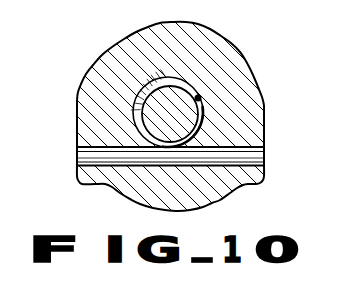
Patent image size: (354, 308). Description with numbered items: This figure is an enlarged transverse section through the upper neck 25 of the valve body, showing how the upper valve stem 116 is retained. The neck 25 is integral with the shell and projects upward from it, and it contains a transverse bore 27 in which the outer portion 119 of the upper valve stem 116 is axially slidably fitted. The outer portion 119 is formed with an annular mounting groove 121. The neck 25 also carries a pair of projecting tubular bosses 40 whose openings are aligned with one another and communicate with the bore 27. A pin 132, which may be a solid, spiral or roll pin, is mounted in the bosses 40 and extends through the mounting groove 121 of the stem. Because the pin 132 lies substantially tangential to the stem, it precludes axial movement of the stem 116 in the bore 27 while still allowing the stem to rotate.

The upper neck 25 is at (104, 64).
The tubular bosses 40 is at (266, 176).
The upper valve stem 116 is at (140, 111).
The outer portion 119 is at (192, 117).
The annular mounting groove 121 is at (190, 83).
The bore 27 is at (201, 98).
The pin 132 is at (264, 157).